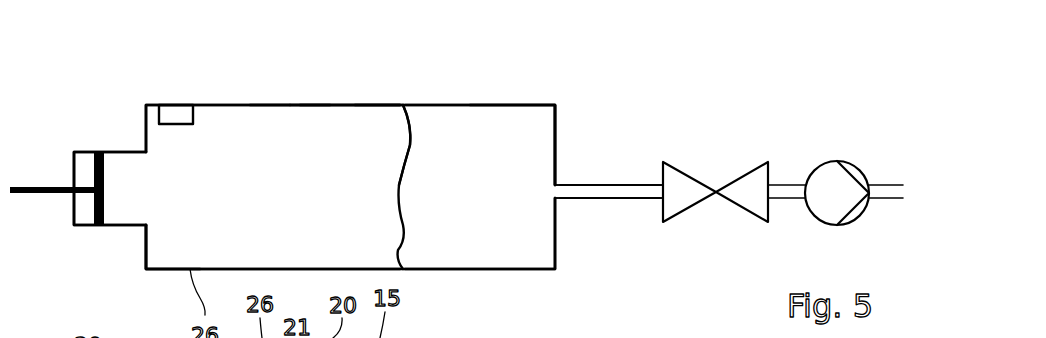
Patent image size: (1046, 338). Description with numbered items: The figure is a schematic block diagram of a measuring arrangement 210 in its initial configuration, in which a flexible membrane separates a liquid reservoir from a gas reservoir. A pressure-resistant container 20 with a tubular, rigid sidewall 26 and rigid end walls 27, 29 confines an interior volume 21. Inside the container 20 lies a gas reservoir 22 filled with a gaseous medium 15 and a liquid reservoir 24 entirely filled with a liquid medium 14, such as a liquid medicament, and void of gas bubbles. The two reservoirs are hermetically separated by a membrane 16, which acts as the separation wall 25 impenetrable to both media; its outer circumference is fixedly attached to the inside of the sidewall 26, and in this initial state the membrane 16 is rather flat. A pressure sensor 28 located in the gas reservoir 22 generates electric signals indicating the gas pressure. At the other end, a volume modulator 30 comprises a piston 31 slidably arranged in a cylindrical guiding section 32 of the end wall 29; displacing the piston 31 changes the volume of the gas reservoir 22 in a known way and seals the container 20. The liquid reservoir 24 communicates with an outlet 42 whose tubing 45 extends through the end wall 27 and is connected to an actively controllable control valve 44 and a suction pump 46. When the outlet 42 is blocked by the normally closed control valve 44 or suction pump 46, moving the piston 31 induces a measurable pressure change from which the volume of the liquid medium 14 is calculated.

The measuring arrangement 210 is at (167, 59).
The liquid medium 14 is at (506, 120).
The gaseous medium 15 is at (367, 118).
The membrane 16 is at (397, 207).
The container 20 is at (340, 83).
The interior volume 21 is at (310, 123).
The gas reservoir 22 is at (260, 214).
The liquid reservoir 24 is at (445, 214).
The separation wall 25 is at (403, 152).
The sidewall 26 is at (276, 103).
The end wall 27 is at (555, 138).
The pressure sensor 28 is at (195, 116).
The end wall 29 is at (147, 245).
The volume modulator 30 is at (86, 119).
The piston 31 is at (104, 175).
The guiding section 32 is at (123, 150).
The outlet 42 is at (590, 220).
The control valve 44 is at (675, 217).
The tubing 45 is at (620, 195).
The suction pump 46 is at (833, 207).